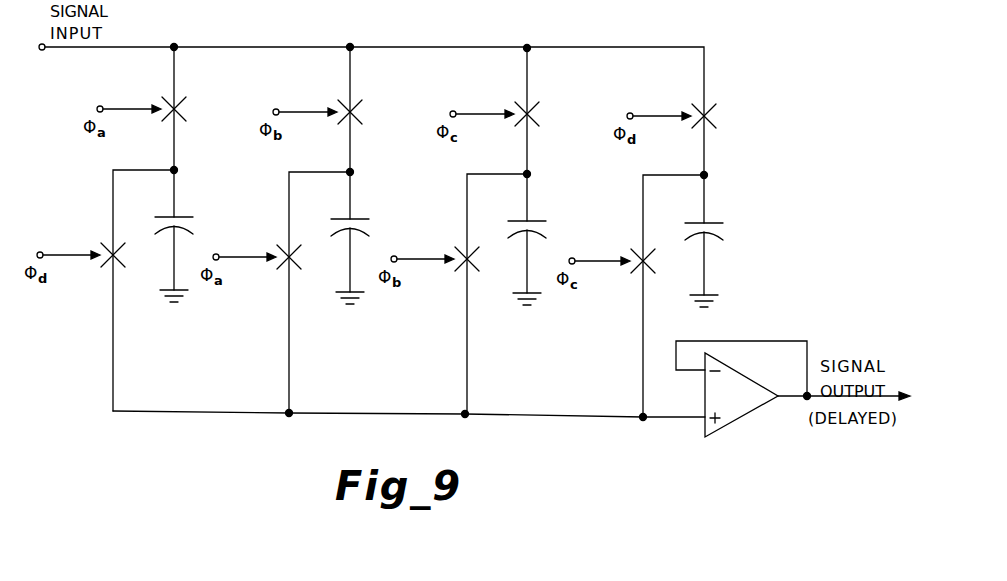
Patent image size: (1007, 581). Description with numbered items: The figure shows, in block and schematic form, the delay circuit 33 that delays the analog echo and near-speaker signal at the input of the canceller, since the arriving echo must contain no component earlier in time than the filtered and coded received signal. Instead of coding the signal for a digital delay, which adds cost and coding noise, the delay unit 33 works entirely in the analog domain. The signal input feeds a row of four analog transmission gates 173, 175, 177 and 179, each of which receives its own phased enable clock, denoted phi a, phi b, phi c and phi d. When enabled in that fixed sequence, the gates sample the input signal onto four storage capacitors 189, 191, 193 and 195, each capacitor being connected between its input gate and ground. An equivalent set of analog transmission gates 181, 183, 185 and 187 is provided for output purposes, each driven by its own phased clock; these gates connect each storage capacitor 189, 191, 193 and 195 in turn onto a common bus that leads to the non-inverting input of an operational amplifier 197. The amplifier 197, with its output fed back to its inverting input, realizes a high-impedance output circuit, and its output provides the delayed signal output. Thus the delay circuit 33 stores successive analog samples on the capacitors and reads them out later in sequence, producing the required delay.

The delay circuit 33 is at (167, 431).
The analog transmission gate 173 is at (181, 106).
The analog transmission gate 175 is at (357, 109).
The analog transmission gate 177 is at (534, 111).
The analog transmission gate 179 is at (711, 113).
The analog transmission gate 181 is at (109, 267).
The analog transmission gate 183 is at (285, 269).
The analog transmission gate 185 is at (468, 271).
The analog transmission gate 187 is at (639, 273).
The storage capacitor 189 is at (183, 221).
The storage capacitor 191 is at (359, 223).
The storage capacitor 193 is at (536, 225).
The storage capacitor 195 is at (713, 227).
The operational amplifier 197 is at (733, 428).